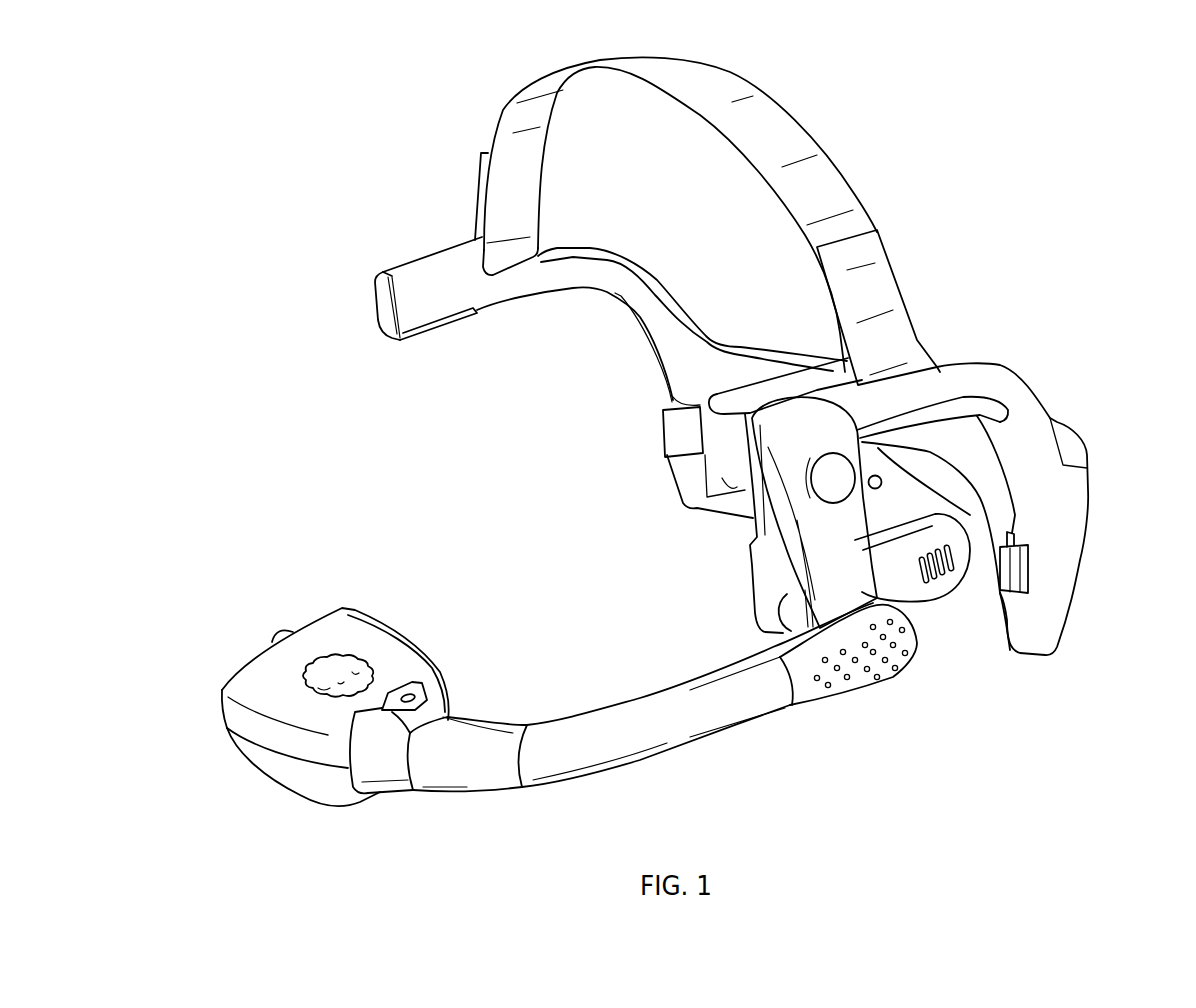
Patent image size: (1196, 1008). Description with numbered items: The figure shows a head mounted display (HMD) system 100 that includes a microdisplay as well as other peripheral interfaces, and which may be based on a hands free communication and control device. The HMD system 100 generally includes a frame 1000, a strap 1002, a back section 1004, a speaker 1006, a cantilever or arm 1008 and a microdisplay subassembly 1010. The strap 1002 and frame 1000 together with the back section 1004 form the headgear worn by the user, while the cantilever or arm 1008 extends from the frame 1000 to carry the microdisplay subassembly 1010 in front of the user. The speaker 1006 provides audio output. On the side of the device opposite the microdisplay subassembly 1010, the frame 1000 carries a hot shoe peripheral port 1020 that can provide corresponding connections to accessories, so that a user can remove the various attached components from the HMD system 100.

The head mounted display system 100 is at (350, 98).
The frame 1000 is at (427, 328).
The strap 1002 is at (806, 127).
The back section 1004 is at (1088, 518).
The speaker 1006 is at (937, 607).
The cantilever or arm 1008 is at (690, 746).
The microdisplay subassembly 1010 is at (362, 613).
The hot shoe peripheral port 1020 is at (383, 305).